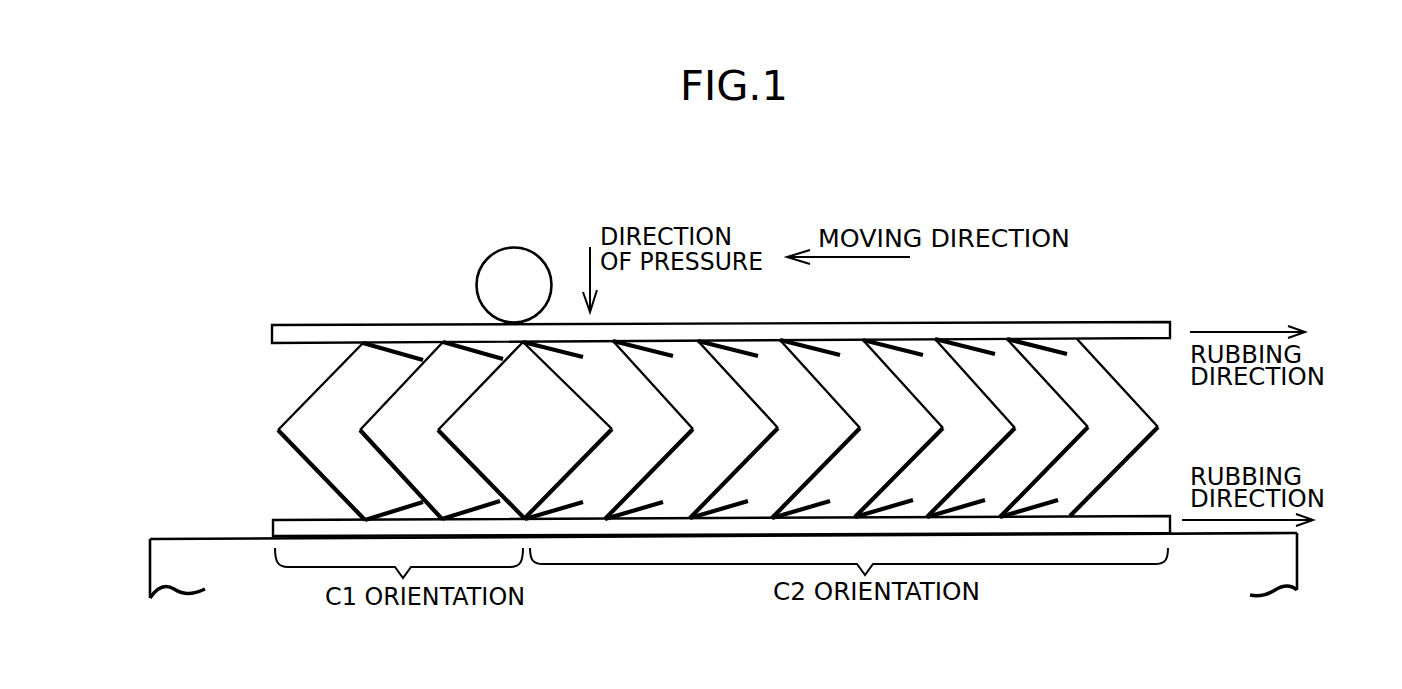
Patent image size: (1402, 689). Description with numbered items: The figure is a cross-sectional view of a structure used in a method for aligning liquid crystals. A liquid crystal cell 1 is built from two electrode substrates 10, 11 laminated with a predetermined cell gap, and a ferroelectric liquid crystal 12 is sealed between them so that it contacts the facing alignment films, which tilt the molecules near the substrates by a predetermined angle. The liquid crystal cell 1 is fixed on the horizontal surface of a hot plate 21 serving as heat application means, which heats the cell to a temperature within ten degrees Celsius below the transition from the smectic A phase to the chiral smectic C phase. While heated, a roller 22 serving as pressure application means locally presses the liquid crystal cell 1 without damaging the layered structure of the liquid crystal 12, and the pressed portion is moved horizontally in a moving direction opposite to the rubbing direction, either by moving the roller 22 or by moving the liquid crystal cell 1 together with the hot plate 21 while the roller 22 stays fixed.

The liquid crystal cell 1 is at (382, 318).
The electrode substrate 10 is at (285, 527).
The electrode substrate 11 is at (302, 330).
The liquid crystal 12 is at (252, 428).
The hot plate 21 is at (1300, 556).
The roller 22 is at (530, 248).